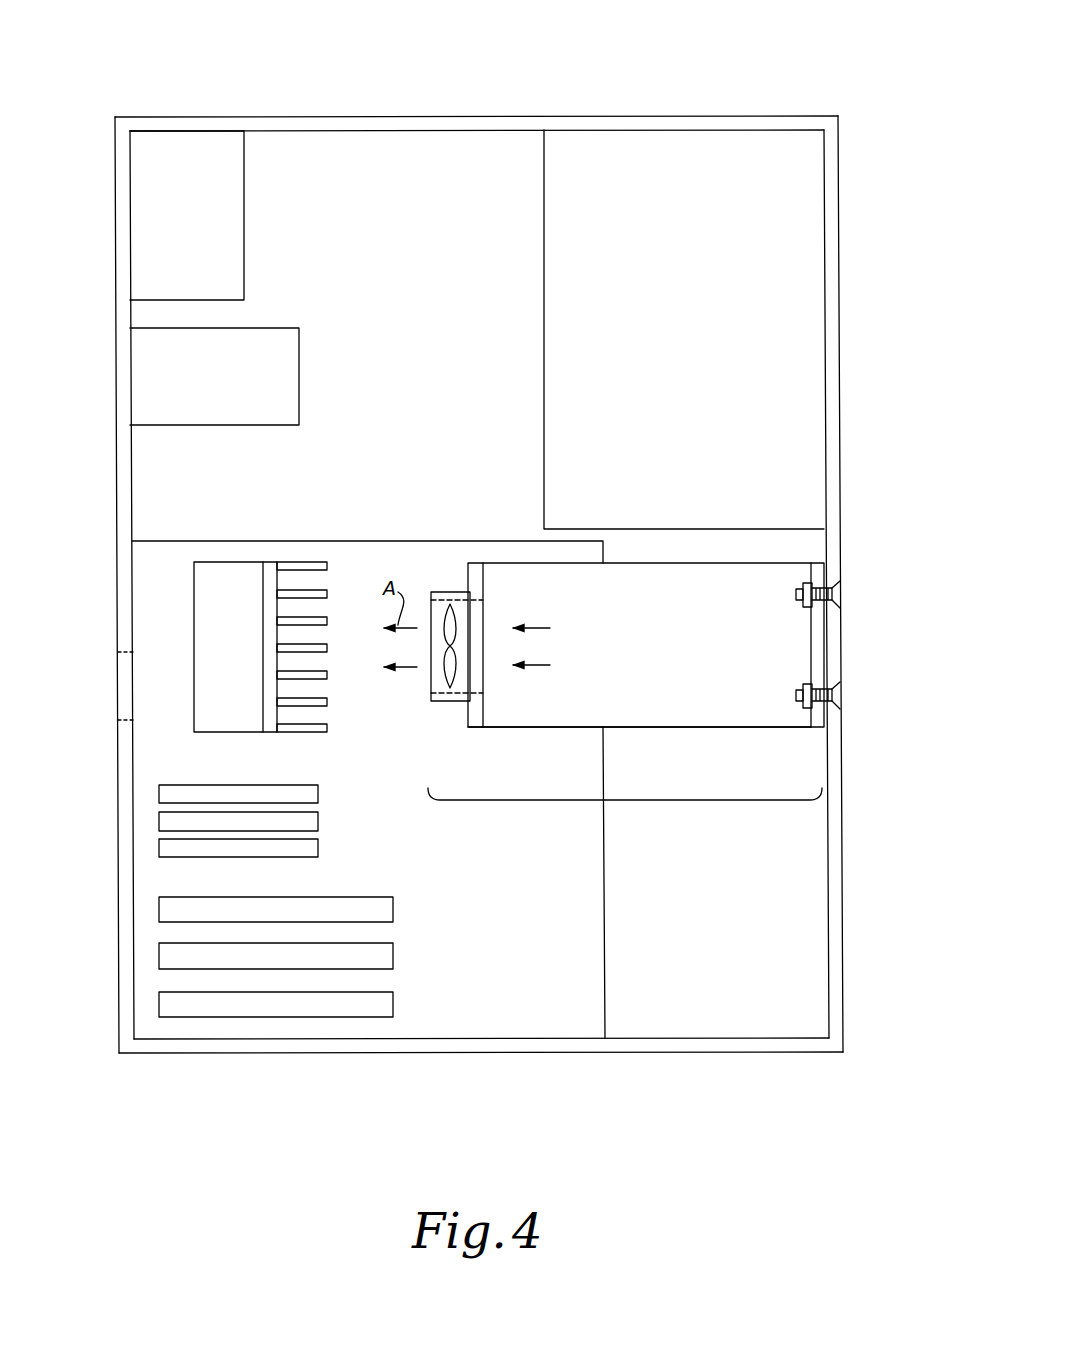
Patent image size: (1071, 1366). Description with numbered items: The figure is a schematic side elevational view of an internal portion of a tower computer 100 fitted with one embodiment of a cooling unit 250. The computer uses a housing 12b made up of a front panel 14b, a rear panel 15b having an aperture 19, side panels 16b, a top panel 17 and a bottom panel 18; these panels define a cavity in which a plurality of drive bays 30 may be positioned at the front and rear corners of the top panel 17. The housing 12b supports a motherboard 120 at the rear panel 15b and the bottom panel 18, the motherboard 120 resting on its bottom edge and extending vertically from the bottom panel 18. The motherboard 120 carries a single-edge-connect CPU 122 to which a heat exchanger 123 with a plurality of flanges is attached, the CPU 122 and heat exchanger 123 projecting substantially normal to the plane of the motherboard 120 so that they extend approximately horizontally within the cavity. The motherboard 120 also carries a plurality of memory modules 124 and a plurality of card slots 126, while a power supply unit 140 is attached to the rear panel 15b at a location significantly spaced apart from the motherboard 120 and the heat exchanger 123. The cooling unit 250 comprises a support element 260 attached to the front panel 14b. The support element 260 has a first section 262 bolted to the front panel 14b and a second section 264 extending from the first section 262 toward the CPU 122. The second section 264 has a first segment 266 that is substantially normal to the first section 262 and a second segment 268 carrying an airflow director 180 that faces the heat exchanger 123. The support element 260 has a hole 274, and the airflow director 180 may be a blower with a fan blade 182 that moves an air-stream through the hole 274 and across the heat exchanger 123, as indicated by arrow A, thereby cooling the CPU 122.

The tower computer 100 is at (732, 78).
The housing 12b is at (838, 116).
The front panel 14b is at (834, 945).
The rear panel 15b is at (125, 870).
The side panels 16b is at (781, 931).
The top panel 17 is at (492, 124).
The bottom panel 18 is at (685, 1040).
The aperture 19 is at (122, 655).
The drive bays 30 is at (234, 228).
The motherboard 120 is at (590, 930).
The single-edge-connect CPU 122 is at (222, 578).
The heat exchanger 123 is at (270, 563).
The memory modules 124 is at (308, 795).
The card slots 126 is at (385, 905).
The power supply unit 140 is at (290, 349).
The airflow director 180 is at (446, 703).
The fan blade 182 is at (450, 605).
The cooling unit 250 is at (630, 800).
The support element 260 is at (672, 548).
The first section 262 is at (818, 645).
The second section 264 is at (483, 727).
The first segment 266 is at (678, 727).
The second segment 268 is at (477, 570).
The hole 274 is at (483, 610).